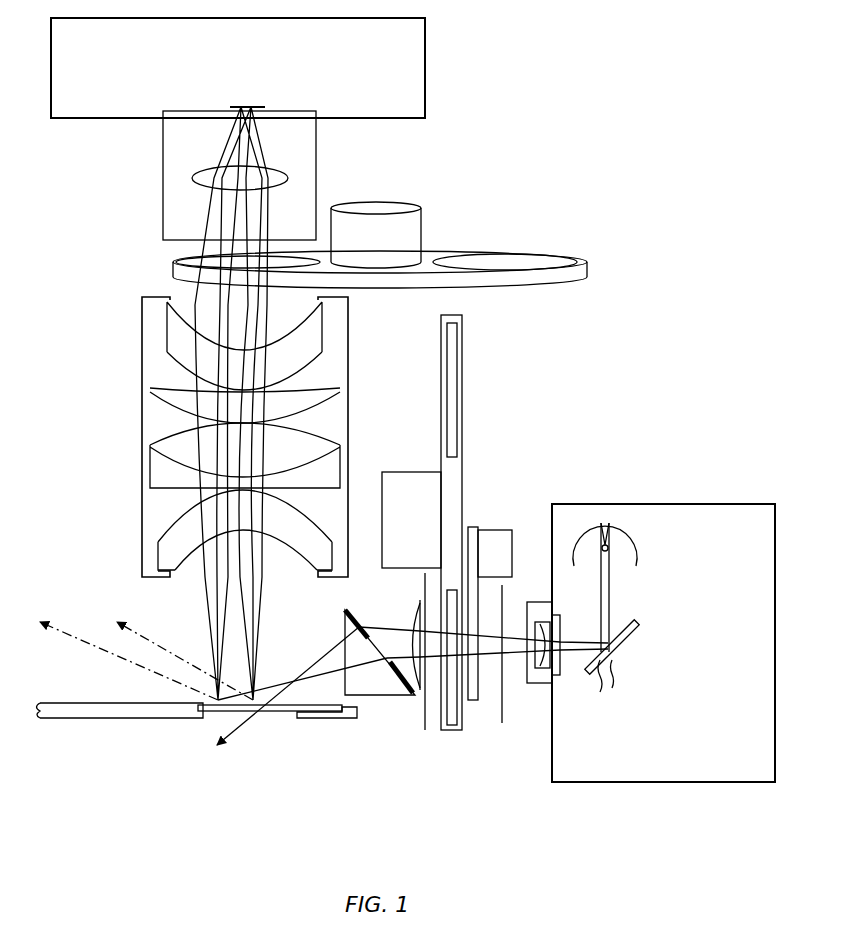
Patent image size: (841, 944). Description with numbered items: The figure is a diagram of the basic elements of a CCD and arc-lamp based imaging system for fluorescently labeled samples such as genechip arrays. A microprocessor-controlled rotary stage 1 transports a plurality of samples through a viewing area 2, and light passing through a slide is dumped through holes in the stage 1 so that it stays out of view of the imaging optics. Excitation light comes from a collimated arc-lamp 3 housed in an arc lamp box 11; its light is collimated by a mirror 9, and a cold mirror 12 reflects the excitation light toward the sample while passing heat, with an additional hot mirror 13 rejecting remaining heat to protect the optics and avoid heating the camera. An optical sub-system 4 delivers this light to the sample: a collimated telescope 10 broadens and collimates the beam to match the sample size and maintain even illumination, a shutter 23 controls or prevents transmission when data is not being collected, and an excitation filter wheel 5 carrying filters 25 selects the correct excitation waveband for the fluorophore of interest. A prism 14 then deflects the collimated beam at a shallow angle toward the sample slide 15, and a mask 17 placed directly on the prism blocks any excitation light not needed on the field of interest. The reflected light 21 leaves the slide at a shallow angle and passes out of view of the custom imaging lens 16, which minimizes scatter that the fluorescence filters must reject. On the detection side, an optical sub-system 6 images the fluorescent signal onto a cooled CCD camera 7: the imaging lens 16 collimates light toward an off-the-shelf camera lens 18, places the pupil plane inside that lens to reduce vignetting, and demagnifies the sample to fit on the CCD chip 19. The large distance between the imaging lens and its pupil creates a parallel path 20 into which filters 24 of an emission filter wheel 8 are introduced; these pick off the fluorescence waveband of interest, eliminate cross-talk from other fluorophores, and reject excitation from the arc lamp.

The rotary stage 1 is at (58, 755).
The viewing area 2 is at (244, 768).
The collimated arc-lamp 3 is at (611, 555).
The optical sub-system 4 is at (442, 820).
The excitation filter wheel 5 is at (463, 345).
The optical sub-system 6 is at (84, 436).
The cooled CCD camera 7 is at (360, 85).
The emission filter wheel 8 is at (431, 258).
The mirror 9 is at (630, 528).
The collimated telescope 10 is at (431, 678).
The arc lamp box 11 is at (817, 637).
The cold mirror 12 is at (632, 647).
The hot mirror 13 is at (560, 682).
The prism 14 is at (371, 684).
The sample slide 15 is at (323, 698).
The imaging lens 16 is at (352, 429).
The mask 17 is at (369, 627).
The camera lens 18 is at (160, 178).
The CCD chip 19 is at (245, 102).
The parallel path 20 is at (156, 244).
The reflected light 21 is at (141, 646).
The shutter 23 is at (486, 522).
The filters 24 is at (529, 258).
The filters 25 is at (455, 408).